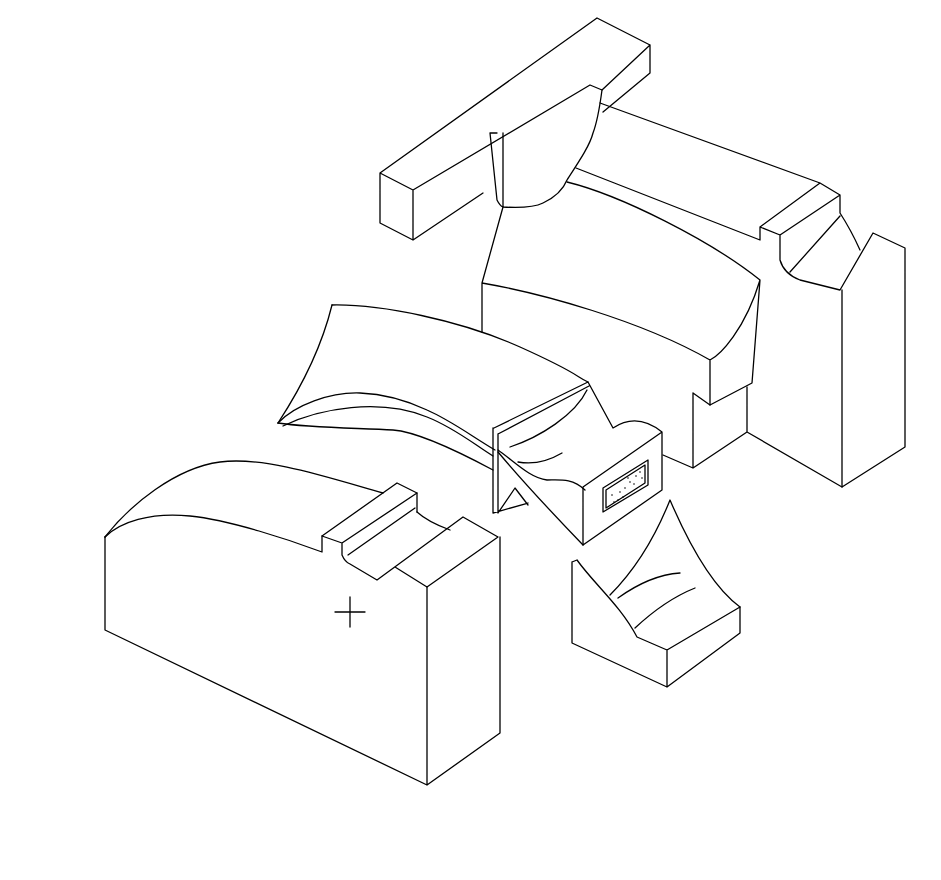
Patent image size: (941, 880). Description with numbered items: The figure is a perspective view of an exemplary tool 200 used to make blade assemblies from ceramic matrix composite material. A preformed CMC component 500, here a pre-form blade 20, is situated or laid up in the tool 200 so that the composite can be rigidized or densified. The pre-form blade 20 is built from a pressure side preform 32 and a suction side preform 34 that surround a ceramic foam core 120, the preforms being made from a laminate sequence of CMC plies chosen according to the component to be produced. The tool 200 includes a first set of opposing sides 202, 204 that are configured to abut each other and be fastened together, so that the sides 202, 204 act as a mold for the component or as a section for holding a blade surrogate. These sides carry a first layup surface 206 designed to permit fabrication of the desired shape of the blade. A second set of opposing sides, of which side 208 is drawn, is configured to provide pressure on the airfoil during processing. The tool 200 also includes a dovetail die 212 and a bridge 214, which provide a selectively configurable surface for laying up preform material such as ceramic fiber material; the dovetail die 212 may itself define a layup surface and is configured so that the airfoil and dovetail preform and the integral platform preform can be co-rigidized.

The tool 200 is at (172, 139).
The preformed CMC component 500 is at (282, 258).
The pre-form blade 20 is at (338, 358).
The pressure side preform 32 is at (409, 367).
The suction side preform 34 is at (393, 420).
The bridge 214 is at (566, 98).
The second set opposing side 208 is at (604, 127).
The first set opposing side 204 is at (723, 195).
The first layup surface 206 is at (642, 288).
The first set opposing side 202 is at (292, 660).
The dovetail die 212 is at (700, 670).
The ceramic foam core 120 is at (645, 477).